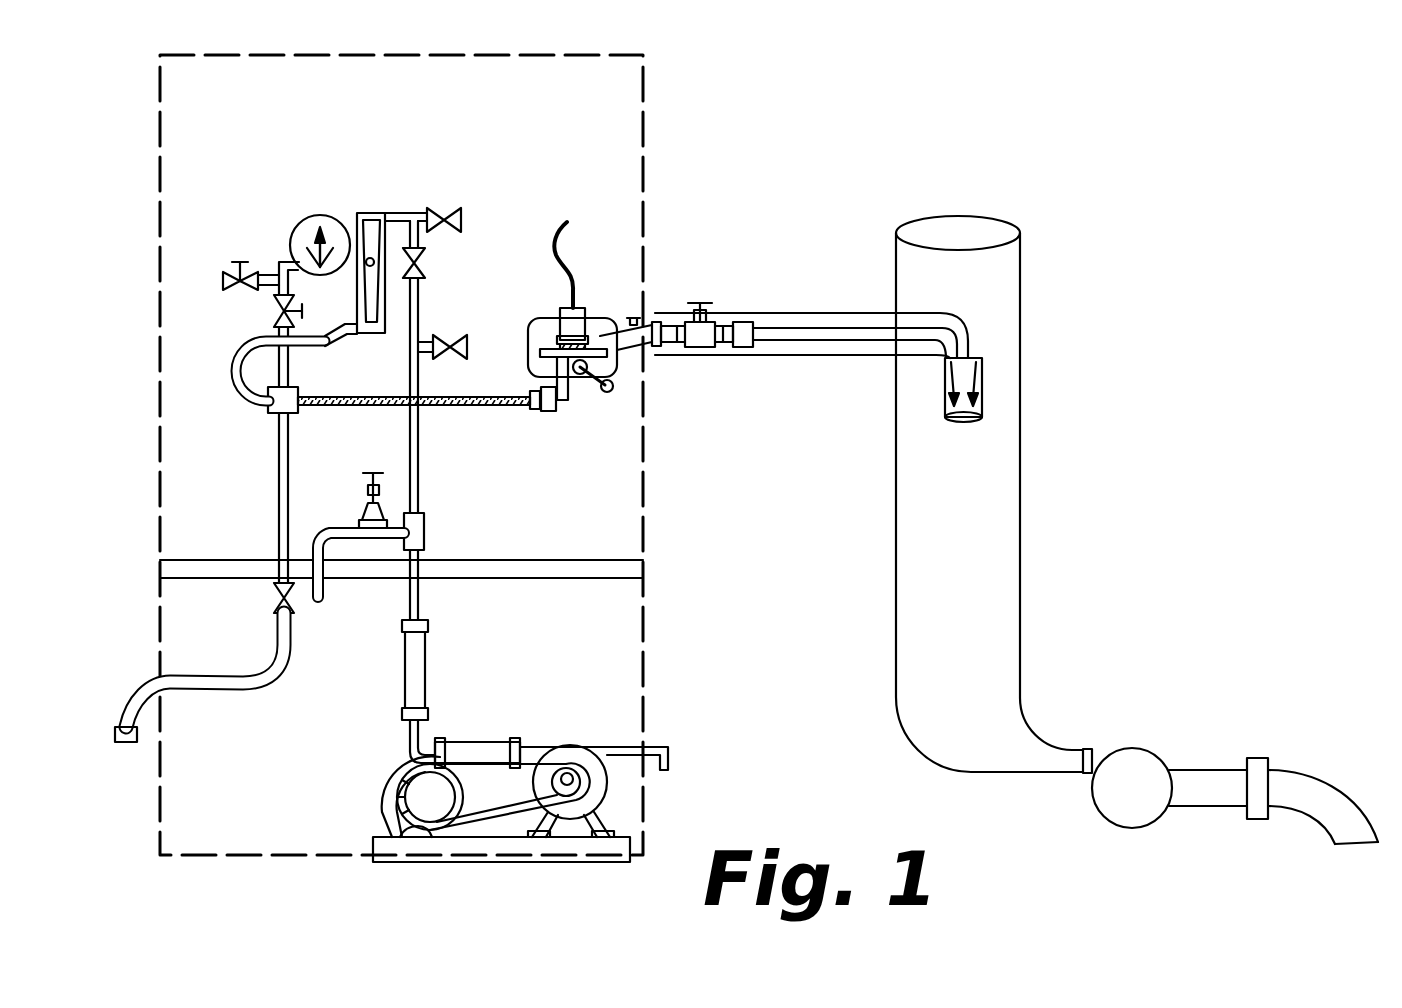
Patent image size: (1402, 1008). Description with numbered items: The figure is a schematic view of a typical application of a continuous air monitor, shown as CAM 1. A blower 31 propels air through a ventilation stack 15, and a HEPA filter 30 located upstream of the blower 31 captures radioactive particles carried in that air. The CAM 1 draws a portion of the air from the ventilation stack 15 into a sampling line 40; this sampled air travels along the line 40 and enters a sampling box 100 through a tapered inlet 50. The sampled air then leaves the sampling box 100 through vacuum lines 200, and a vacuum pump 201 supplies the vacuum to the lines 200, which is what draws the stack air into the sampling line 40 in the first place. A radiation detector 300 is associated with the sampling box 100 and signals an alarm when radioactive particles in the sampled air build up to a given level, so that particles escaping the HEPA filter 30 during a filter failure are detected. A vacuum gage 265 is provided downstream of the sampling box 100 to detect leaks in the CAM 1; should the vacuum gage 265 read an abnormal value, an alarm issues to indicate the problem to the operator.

The CAM 1 is at (875, 190).
The ventilation stack 15 is at (1021, 581).
The HEPA filter 30 is at (1274, 767).
The blower 31 is at (1128, 828).
The line 40 is at (808, 357).
The tapered inlet 50 is at (608, 317).
The sampling box 100 is at (551, 311).
The vacuum lines 200 is at (395, 400).
The vacuum pump 201 is at (483, 738).
The vacuum gage 265 is at (322, 213).
The radiation detector 300 is at (560, 321).